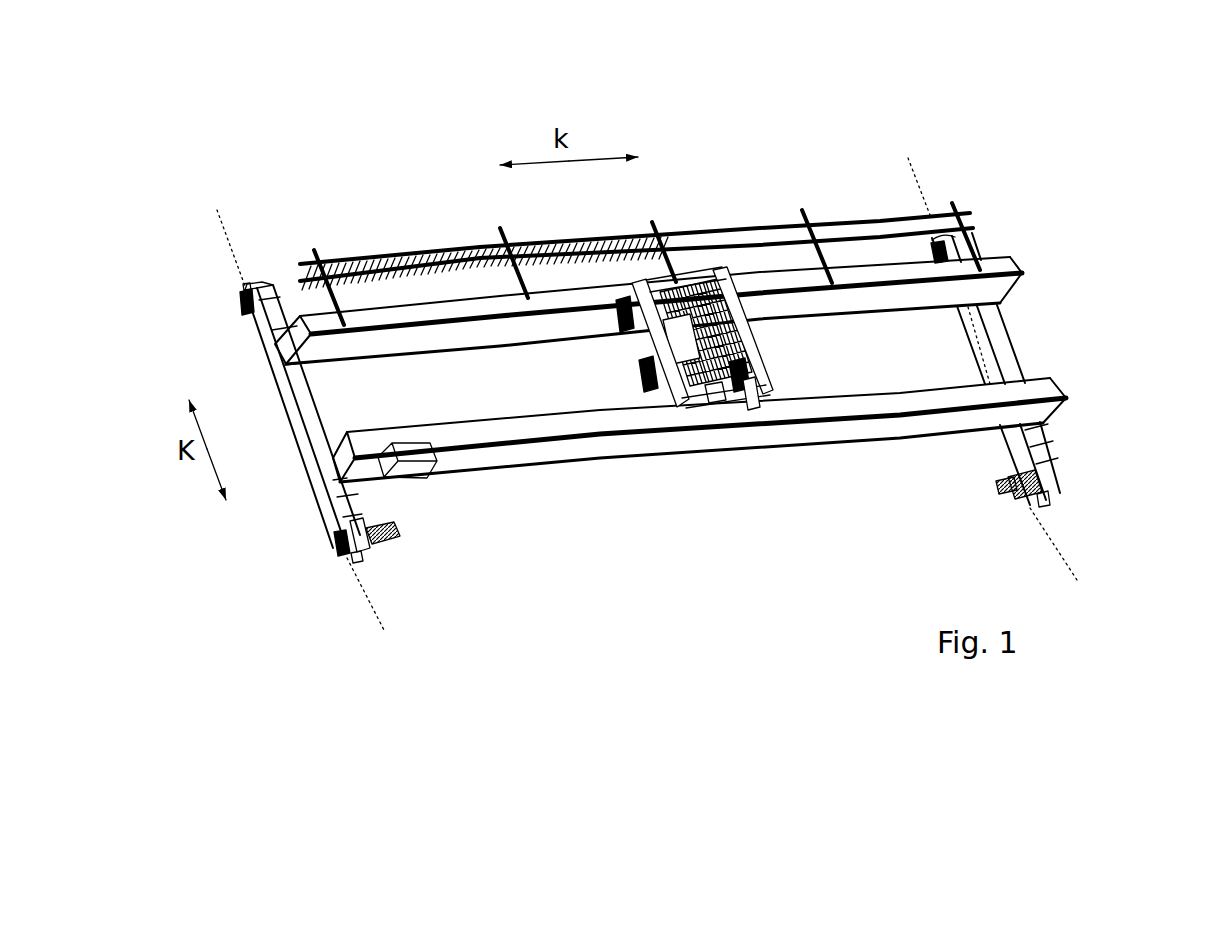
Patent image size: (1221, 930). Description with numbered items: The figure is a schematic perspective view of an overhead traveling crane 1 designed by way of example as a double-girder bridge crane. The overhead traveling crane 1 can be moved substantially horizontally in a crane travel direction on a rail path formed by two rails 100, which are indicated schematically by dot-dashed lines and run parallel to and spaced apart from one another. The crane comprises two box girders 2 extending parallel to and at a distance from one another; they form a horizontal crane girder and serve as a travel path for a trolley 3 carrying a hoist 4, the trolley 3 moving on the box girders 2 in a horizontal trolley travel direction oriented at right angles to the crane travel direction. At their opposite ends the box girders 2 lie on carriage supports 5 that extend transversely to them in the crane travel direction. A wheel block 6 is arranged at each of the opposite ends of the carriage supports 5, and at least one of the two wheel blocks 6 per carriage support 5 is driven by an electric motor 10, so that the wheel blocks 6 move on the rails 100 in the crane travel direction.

The overhead traveling crane 1 is at (308, 158).
The box girder 2 is at (1005, 262).
The trolley 3 is at (749, 312).
The hoist 4 is at (719, 394).
The carriage support 5 is at (308, 393).
The wheel block 6 is at (232, 312).
The electric motor 10 is at (400, 548).
The rail 100 is at (917, 178).